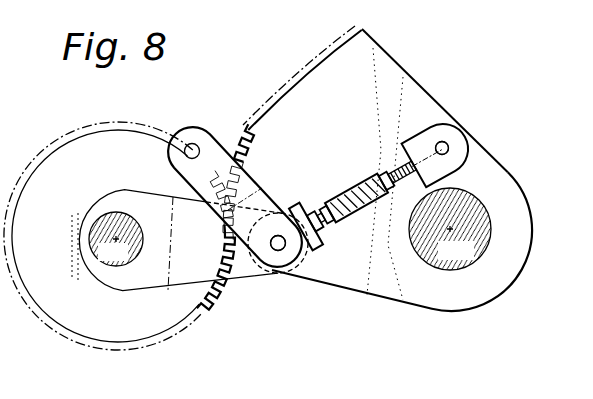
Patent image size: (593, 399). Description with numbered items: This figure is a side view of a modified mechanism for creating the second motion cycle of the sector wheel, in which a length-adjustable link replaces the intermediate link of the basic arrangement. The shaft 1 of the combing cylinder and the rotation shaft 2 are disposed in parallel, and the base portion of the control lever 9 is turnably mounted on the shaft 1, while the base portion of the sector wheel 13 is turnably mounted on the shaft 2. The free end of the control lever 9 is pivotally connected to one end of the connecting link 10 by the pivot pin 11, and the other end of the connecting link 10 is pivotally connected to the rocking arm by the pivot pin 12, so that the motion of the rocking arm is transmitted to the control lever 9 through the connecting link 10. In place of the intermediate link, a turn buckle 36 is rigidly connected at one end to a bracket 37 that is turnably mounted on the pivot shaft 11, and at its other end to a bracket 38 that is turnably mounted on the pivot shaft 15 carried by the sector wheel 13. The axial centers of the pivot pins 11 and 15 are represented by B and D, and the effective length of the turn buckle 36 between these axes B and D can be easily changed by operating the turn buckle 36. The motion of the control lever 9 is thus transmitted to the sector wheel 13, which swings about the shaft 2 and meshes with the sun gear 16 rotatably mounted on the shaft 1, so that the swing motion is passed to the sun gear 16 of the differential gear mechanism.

The shaft 1 is at (93, 223).
The rotation shaft 2 is at (488, 239).
The control lever 9 is at (178, 280).
The connecting link 10 is at (210, 141).
The pivot pin 11 is at (277, 251).
The pivot pin 12 is at (187, 146).
The sector wheel 13 is at (376, 44).
The pivot pin 15 is at (449, 147).
The sun gear 16 is at (44, 151).
The turn buckle 36 is at (350, 180).
The bracket 37 is at (294, 211).
The bracket 38 is at (418, 131).
The axial center of pivot pin 11 B is at (285, 250).
The axial center of pivot pin 15 D is at (445, 142).